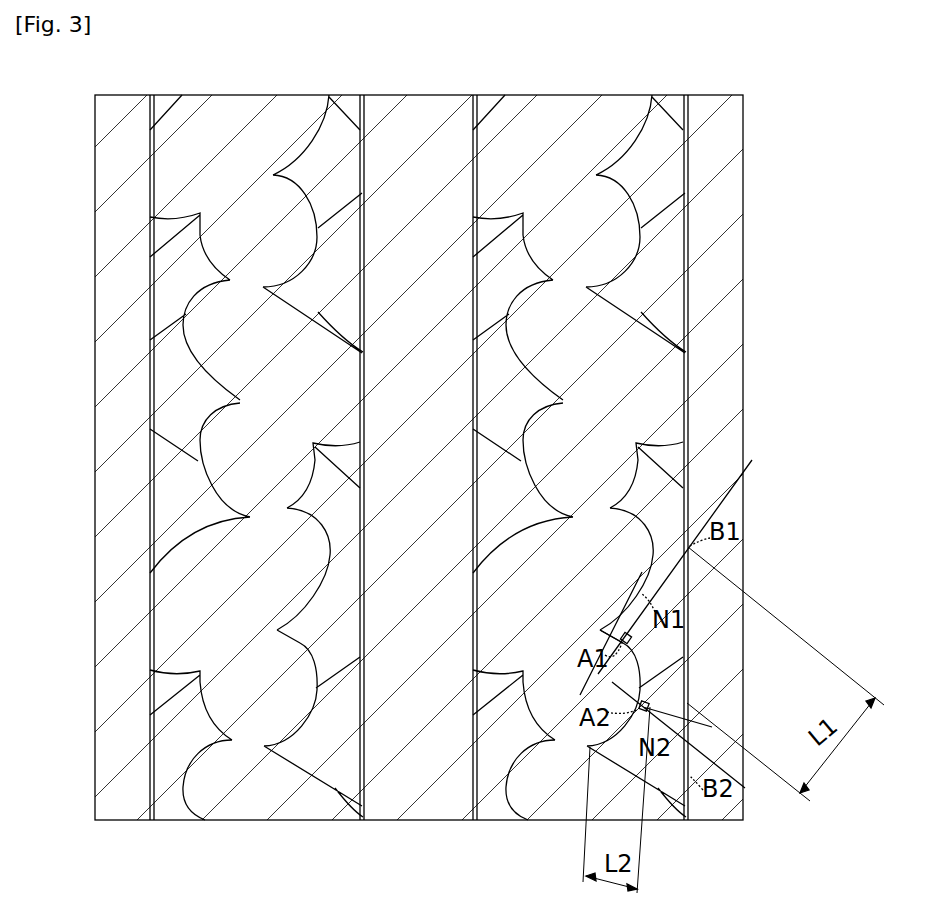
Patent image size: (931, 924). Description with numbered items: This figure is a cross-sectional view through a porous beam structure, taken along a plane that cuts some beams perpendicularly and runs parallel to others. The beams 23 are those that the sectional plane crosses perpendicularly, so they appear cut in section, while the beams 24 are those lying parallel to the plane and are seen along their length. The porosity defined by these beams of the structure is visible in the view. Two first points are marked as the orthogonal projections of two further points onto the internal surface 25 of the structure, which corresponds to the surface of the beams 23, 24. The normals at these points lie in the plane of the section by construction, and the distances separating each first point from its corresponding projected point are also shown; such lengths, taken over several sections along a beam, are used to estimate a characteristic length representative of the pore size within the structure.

The beams perpendicular to the cross-sectional plane 23 is at (262, 228).
The beams parallel to the cross-sectional plane 24 is at (110, 766).
The internal surface of the structure 25 is at (653, 665).